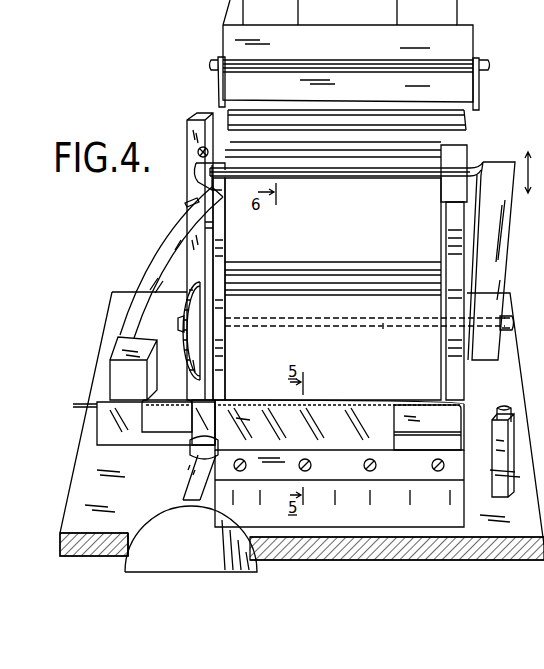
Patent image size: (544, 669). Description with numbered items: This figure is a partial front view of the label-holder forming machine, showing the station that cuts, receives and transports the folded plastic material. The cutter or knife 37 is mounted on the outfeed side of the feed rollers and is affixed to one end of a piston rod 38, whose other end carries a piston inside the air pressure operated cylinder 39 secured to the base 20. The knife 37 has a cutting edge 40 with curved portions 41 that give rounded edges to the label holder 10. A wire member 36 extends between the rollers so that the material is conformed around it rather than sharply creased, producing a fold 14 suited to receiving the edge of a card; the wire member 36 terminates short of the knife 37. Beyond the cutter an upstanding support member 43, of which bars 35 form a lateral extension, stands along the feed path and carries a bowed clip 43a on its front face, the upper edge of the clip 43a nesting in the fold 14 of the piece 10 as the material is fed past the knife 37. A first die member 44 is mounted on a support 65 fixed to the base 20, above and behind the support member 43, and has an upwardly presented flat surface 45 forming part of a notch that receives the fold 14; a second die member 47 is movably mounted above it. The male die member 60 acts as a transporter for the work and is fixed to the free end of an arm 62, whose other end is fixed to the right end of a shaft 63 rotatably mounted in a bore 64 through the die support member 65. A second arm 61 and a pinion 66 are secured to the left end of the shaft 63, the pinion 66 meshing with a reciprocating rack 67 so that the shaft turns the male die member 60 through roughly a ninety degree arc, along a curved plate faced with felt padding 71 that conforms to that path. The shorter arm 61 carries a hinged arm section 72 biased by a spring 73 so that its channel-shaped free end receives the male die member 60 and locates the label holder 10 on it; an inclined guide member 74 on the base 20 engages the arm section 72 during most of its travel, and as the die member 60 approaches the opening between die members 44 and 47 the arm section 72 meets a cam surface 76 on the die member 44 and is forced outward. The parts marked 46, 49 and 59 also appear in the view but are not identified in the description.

The label holder 10 is at (98, 421).
The fold 14 is at (350, 400).
The base 20 is at (75, 478).
The bars 35 is at (118, 352).
The wire member 36 is at (88, 404).
The cutter or knife 37 is at (190, 447).
The piston rod 38 is at (196, 493).
The air pressure operated cylinder 39 is at (156, 512).
The cutting edge 40 is at (222, 403).
The curved portions 41 is at (512, 414).
The upstanding support member 43 is at (411, 402).
The bowed clip 43a is at (432, 434).
The first die member 44 is at (467, 152).
The upwardly presented flat surface 45 is at (458, 134).
The cabinet 46 is at (468, 105).
The second die member 47 is at (462, 63).
The bolt 49 is at (198, 152).
The bracket 59 is at (479, 87).
The male die member 60 is at (380, 172).
The second arm 61 is at (205, 262).
The arm 62 is at (508, 258).
The shaft 63 is at (383, 333).
The bore 64 is at (446, 322).
The die support member 65 is at (466, 350).
The pinion 66 is at (188, 312).
The reciprocating rack 67 is at (188, 372).
The felt padding 71 is at (346, 218).
The hinged arm section 72 is at (194, 196).
The spring 73 is at (186, 207).
The inclined guide member 74 is at (168, 262).
The cam surface 76 is at (238, 163).